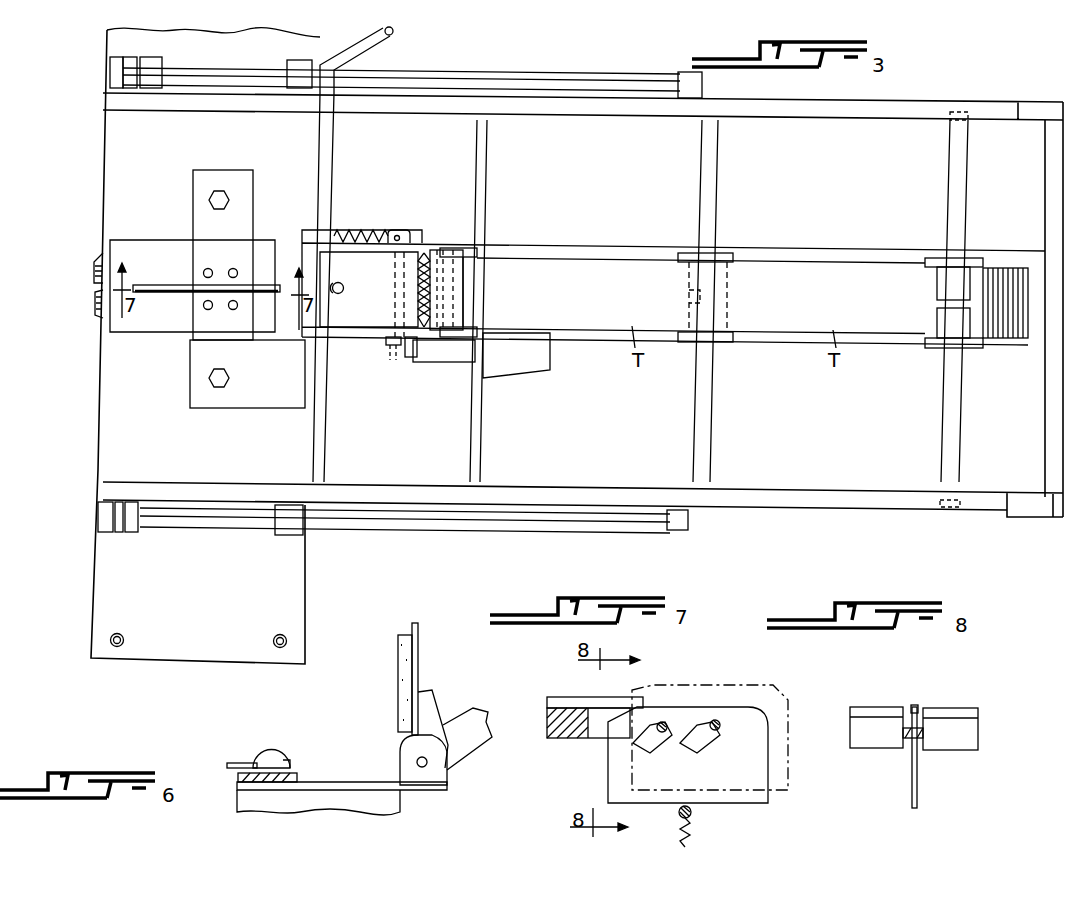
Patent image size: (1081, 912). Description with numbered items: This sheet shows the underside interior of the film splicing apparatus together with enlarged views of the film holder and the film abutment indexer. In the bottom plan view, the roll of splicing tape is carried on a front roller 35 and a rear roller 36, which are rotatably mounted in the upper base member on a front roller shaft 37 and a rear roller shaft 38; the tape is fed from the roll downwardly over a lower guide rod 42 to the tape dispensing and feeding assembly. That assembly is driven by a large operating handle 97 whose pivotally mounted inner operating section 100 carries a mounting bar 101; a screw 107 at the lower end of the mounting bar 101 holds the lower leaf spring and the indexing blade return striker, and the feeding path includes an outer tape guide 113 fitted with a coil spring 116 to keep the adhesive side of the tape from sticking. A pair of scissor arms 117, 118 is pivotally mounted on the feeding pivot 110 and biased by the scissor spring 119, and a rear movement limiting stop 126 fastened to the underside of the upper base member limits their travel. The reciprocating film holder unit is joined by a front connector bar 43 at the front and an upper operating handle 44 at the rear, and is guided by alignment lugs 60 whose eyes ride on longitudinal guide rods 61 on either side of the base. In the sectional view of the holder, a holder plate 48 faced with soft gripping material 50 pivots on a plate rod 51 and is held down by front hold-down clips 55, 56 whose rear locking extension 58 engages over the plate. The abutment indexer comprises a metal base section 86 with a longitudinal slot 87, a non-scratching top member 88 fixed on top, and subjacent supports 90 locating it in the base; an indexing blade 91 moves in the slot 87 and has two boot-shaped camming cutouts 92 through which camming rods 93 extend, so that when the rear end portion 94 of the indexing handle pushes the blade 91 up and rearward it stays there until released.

In FIG. 3, the front roller 35 is at (718, 338).
In FIG. 3, the rear roller 36 is at (968, 345).
In FIG. 3, the front roller shaft 37 is at (706, 388).
In FIG. 3, the rear roller shaft 38 is at (947, 395).
In FIG. 3, the lower guide rod 42 is at (479, 401).
In FIG. 6, the front connector bar 43 is at (242, 775).
In FIG. 6, the upper operating handle 44 is at (453, 723).
In FIG. 6, the holder plate 48 is at (418, 658).
In FIG. 6, the soft gripping material 50 is at (402, 658).
In FIG. 6, the plate rod 51 is at (430, 763).
In FIG. 3, the front hold-down clip 55 is at (93, 298).
In FIG. 6, the front hold-down clip 55 is at (232, 763).
In FIG. 3, the front hold-down clip 56 is at (95, 276).
In FIG. 6, the rear locking extension 58 is at (277, 757).
In FIG. 3, the alignment lug 60 is at (313, 59).
In FIG. 3, the guide rod 61 is at (561, 80).
In FIG. 3, the metal base section 86 is at (156, 323).
In FIG. 7, the metal base section 86 is at (557, 738).
In FIG. 8, the metal base section 86 is at (862, 742).
In FIG. 8, the longitudinal slot 87 is at (923, 710).
In FIG. 7, the top member 88 is at (557, 700).
In FIG. 8, the top member 88 is at (875, 708).
In FIG. 3, the subjacent support 90 is at (203, 321).
In FIG. 3, the indexing blade 91 is at (168, 292).
In FIG. 7, the indexing blade 91 is at (760, 755).
In FIG. 8, the indexing blade 91 is at (918, 775).
In FIG. 7, the camming cutout 92 is at (653, 733).
In FIG. 7, the camming rod 93 is at (718, 724).
In FIG. 8, the camming rod 93 is at (908, 740).
In FIG. 7, the rear end portion 94 is at (692, 817).
In FIG. 3, the operating handle 97 is at (386, 35).
In FIG. 3, the inner operating section 100 is at (333, 147).
In FIG. 3, the mounting bar 101 is at (323, 340).
In FIG. 3, the screw 107 is at (341, 294).
In FIG. 3, the feeding pivot 110 is at (403, 257).
In FIG. 3, the outer tape guide 113 is at (412, 357).
In FIG. 3, the coil spring 116 is at (420, 343).
In FIG. 3, the scissor arm 117 is at (390, 347).
In FIG. 3, the scissor arm 118 is at (397, 230).
In FIG. 3, the scissor spring 119 is at (362, 229).
In FIG. 3, the rear movement limiting stop 126 is at (452, 365).